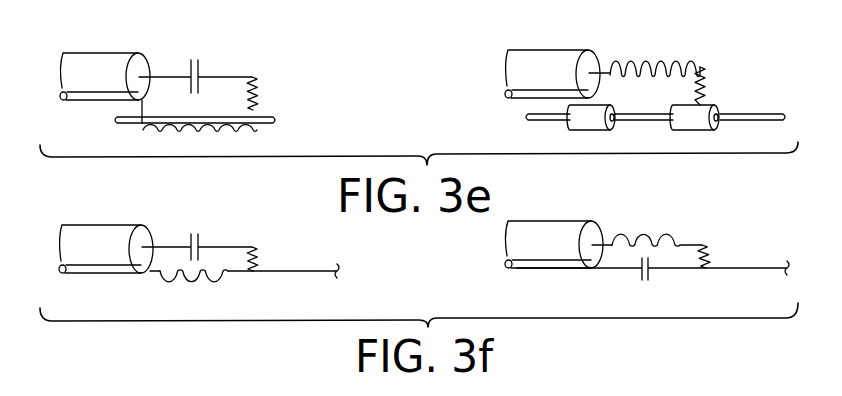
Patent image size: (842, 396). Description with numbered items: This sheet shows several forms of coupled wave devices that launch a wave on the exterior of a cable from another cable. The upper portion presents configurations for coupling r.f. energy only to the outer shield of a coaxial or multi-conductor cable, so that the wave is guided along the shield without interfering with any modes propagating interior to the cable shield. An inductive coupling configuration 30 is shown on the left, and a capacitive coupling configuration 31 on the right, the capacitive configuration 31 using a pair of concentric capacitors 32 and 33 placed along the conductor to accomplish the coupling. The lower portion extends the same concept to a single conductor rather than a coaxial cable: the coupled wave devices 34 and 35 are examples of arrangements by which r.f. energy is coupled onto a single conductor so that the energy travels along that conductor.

In FIG. 3E, the inductive coupling configuration 30 is at (200, 62).
In FIG. 3E, the capacitive coupling configuration 31 is at (635, 46).
In FIG. 3E, the concentric capacitor 32 is at (578, 131).
In FIG. 3E, the concentric capacitor 33 is at (707, 131).
In FIG. 3F, the coupled wave device 34 is at (205, 236).
In FIG. 3F, the coupled wave device 35 is at (710, 240).